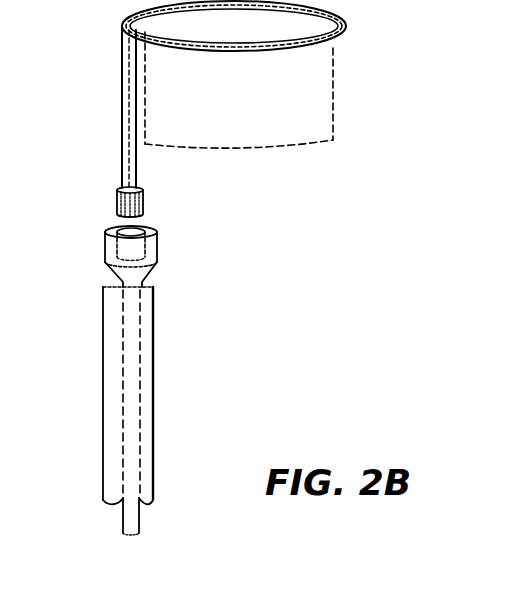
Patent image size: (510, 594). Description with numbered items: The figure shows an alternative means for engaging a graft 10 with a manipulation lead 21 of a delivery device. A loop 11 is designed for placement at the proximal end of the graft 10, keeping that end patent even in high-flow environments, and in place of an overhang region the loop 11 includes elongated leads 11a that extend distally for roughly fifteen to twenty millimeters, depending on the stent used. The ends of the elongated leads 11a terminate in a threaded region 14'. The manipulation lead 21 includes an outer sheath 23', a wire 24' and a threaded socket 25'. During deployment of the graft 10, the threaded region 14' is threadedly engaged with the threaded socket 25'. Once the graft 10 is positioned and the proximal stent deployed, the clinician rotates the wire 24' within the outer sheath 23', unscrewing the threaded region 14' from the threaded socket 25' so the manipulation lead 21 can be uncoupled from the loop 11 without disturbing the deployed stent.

The graft 10 is at (262, 108).
The loop 11 is at (346, 22).
The elongated leads 11a is at (122, 78).
The threaded region 14' is at (164, 198).
The threaded socket 25' is at (161, 256).
The manipulation lead 21 is at (179, 427).
The outer sheath 23' is at (163, 395).
The wire 24' is at (168, 533).